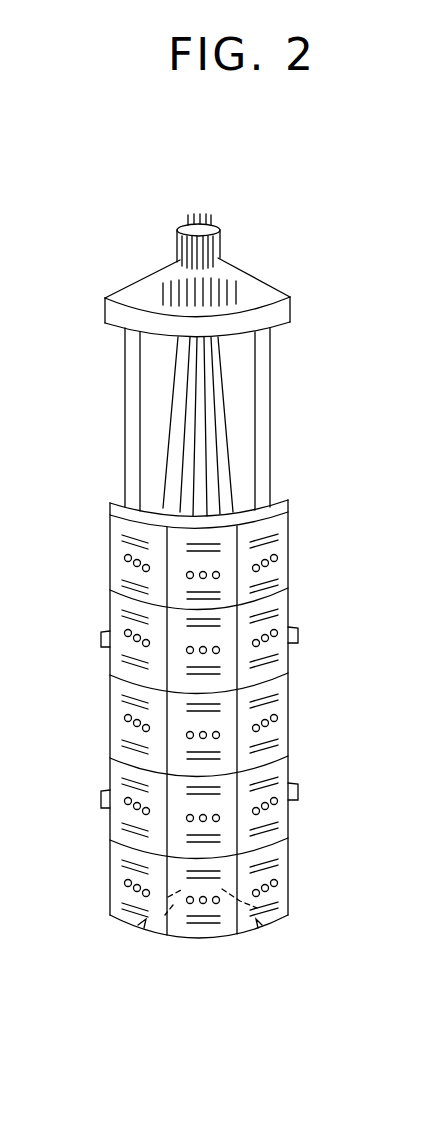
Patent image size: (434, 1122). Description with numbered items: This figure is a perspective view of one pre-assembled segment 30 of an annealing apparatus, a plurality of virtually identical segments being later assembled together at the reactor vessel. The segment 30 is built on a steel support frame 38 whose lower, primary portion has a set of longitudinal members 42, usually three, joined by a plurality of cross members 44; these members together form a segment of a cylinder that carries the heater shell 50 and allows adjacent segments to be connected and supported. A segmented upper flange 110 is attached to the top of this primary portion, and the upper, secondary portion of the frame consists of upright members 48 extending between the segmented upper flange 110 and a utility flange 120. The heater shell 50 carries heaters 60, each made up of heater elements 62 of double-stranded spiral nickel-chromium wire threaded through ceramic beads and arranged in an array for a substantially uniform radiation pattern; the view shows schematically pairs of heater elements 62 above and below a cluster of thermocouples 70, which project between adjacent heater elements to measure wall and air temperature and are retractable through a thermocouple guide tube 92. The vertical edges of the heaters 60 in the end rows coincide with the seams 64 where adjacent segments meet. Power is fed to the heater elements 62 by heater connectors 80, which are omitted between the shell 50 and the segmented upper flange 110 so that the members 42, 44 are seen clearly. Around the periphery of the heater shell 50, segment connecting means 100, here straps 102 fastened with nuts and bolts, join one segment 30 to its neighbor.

The segment 30 is at (98, 428).
The support frame 38 is at (288, 367).
The longitudinal members 42 is at (269, 437).
The cross members 44 is at (240, 381).
The upright members 48 is at (222, 241).
The heater shell 50 is at (287, 500).
The heater 60 is at (289, 853).
The heater elements 62 is at (130, 535).
The seams 64 is at (108, 725).
The thermocouples 70 is at (273, 560).
The heater connectors 80 is at (212, 219).
The thermocouple guide tube 92 is at (162, 290).
The segment connecting means 100 is at (99, 641).
The straps 102 is at (300, 797).
The segmented upper flange 110 is at (281, 313).
The utility flange 120 is at (182, 227).